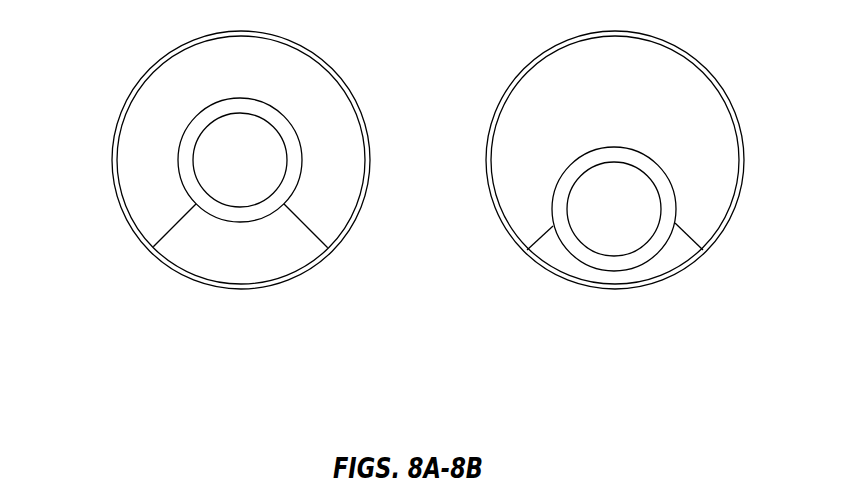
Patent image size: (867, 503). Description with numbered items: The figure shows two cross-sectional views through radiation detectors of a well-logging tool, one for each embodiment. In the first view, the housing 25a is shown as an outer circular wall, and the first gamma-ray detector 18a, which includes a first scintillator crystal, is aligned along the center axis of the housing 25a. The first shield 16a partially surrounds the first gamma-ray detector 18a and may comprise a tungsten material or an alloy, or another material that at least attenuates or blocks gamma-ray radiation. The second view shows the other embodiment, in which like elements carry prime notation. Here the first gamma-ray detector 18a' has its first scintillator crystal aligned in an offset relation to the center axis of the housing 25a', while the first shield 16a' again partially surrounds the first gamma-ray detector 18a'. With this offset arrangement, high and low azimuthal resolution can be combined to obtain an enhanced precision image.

In FIG. 8A, the first shield 16a is at (267, 160).
In FIG. 8A, the first gamma-ray detector 18a is at (168, 160).
In FIG. 8A, the housing 25a is at (241, 203).
In FIG. 8B, the first shield 16a' is at (647, 160).
In FIG. 8B, the first gamma-ray detector 18a' is at (542, 209).
In FIG. 8B, the housing 25a' is at (615, 203).